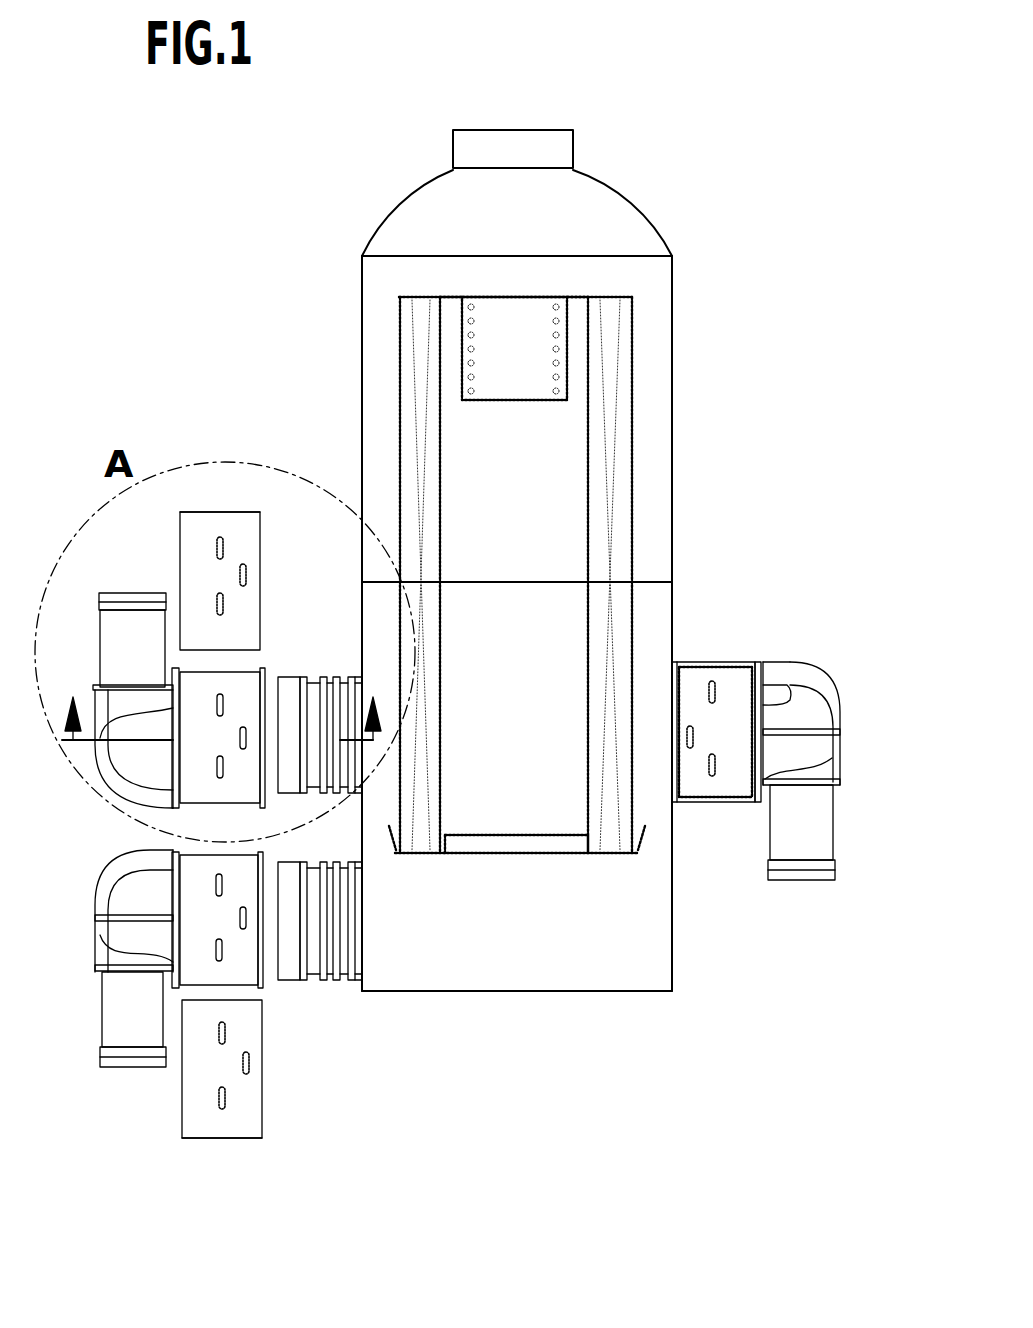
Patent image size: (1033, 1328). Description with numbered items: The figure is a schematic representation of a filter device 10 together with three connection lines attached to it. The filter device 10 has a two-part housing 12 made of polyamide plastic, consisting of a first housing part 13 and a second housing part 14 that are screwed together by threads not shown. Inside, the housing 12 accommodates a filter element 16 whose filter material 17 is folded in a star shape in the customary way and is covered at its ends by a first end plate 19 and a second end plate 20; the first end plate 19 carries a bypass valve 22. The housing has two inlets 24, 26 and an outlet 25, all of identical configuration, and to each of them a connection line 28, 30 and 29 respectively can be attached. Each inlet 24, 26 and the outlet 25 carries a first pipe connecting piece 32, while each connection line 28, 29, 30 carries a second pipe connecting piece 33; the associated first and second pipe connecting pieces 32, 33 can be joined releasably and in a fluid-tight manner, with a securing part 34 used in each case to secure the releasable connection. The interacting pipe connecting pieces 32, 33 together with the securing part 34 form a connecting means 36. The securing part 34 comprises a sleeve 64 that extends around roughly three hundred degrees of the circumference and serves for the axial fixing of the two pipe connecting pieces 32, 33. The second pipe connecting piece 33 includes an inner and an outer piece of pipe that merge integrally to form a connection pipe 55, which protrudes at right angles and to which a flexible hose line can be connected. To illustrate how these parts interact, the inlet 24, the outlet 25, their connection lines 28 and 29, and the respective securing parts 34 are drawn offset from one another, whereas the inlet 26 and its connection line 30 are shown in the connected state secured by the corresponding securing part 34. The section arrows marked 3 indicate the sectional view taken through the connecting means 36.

The section line 3- 3 is at (221, 740).
The filter device 10 is at (706, 238).
The housing 12 is at (688, 522).
The first housing part 13 is at (368, 283).
The second housing part 14 is at (660, 963).
The filter element 16 is at (392, 366).
The filter material 17 is at (616, 412).
The first end plate 19 is at (433, 297).
The second end plate 20 is at (588, 857).
The bypass valve 22 is at (546, 346).
The inlet 24 is at (345, 668).
The outlet 25 is at (345, 992).
The inlet 26 is at (705, 808).
The connection line 28 is at (82, 640).
The connection line 29 is at (90, 962).
The connection line 30 is at (855, 768).
The first pipe connecting piece 32 is at (289, 681).
The second pipe connecting piece 33 is at (216, 755).
The securing part 34 is at (200, 512).
The connecting means 36 is at (284, 541).
The connection pipe 55 is at (145, 653).
The sleeve 64 is at (731, 676).